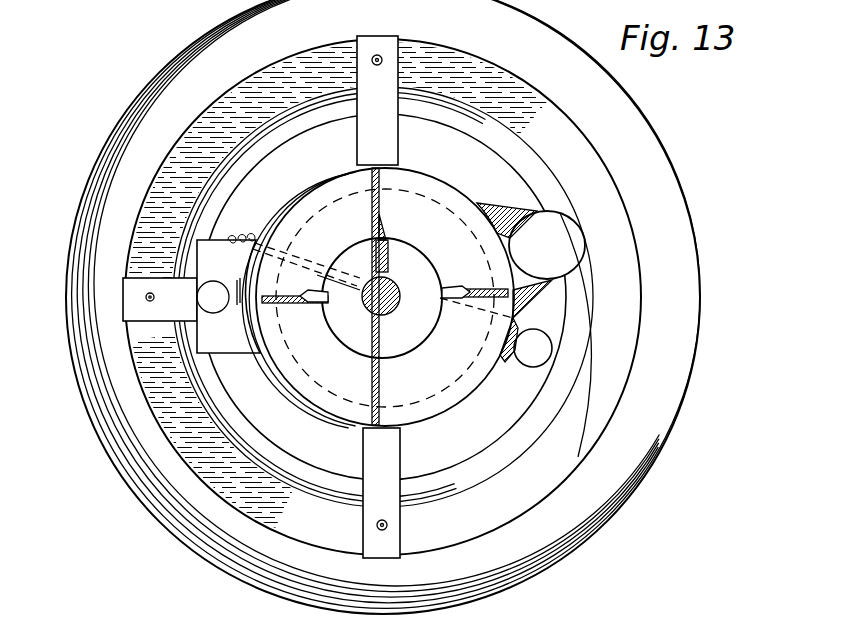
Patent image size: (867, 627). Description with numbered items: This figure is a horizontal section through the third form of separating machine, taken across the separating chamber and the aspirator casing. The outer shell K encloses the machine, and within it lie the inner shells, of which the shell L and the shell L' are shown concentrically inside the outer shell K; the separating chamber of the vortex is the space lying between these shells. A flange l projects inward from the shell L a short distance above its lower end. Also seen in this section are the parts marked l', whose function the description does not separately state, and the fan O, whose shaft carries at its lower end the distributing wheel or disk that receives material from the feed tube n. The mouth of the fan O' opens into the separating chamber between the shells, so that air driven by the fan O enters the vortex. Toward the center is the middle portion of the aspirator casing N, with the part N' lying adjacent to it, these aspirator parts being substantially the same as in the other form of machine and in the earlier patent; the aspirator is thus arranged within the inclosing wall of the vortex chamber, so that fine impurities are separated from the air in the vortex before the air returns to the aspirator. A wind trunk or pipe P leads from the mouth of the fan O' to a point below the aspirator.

The outer shell K is at (66, 284).
The inner shell L is at (346, 285).
The inner shell L' is at (383, 297).
The flange l is at (383, 323).
The lugs l' is at (261, 297).
The wind trunk P is at (228, 296).
The fan O is at (378, 298).
The mouth of the fan O' is at (385, 296).
The middle portion of the aspirator casing N is at (531, 260).
The pawl lever N' is at (592, 335).
The feed tube n is at (526, 342).